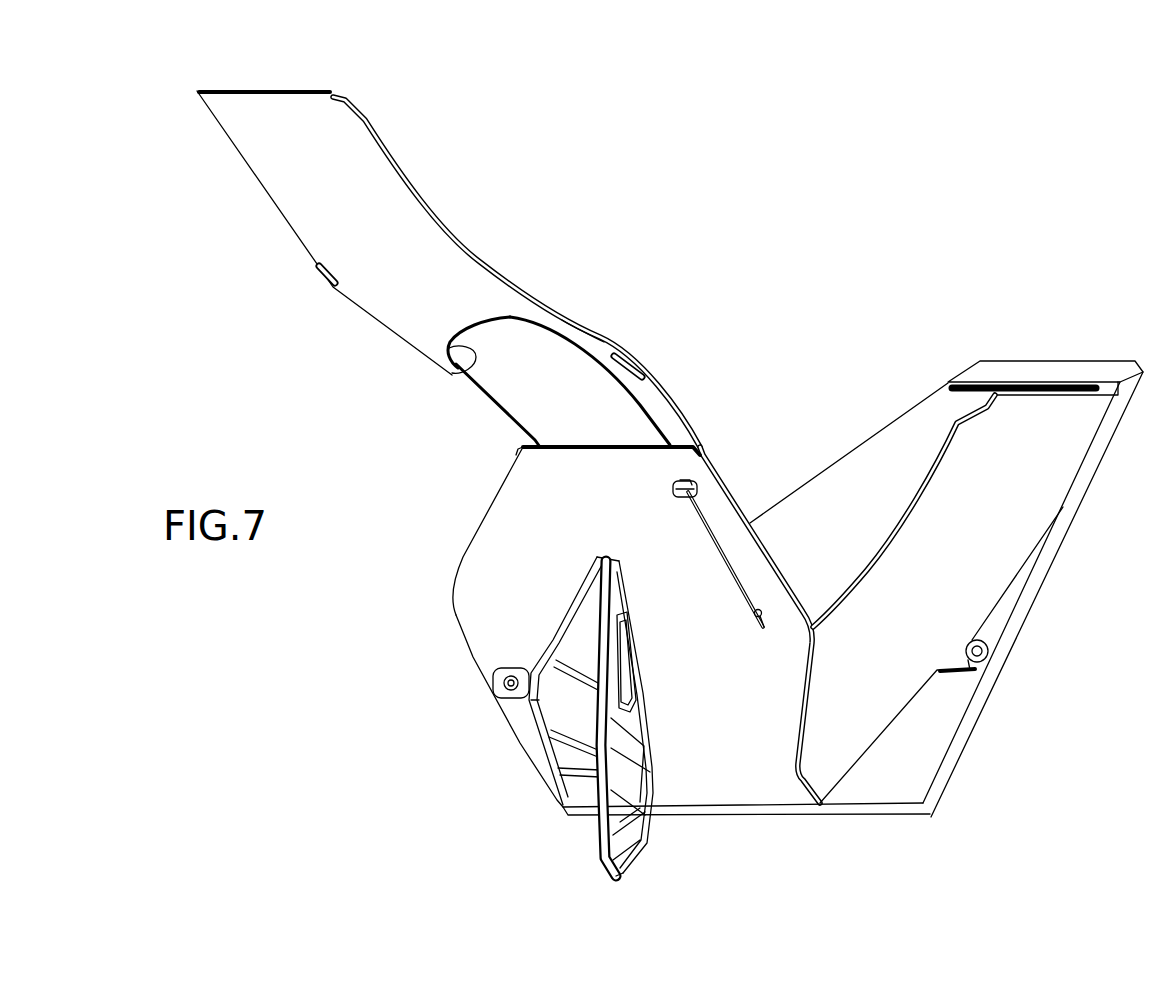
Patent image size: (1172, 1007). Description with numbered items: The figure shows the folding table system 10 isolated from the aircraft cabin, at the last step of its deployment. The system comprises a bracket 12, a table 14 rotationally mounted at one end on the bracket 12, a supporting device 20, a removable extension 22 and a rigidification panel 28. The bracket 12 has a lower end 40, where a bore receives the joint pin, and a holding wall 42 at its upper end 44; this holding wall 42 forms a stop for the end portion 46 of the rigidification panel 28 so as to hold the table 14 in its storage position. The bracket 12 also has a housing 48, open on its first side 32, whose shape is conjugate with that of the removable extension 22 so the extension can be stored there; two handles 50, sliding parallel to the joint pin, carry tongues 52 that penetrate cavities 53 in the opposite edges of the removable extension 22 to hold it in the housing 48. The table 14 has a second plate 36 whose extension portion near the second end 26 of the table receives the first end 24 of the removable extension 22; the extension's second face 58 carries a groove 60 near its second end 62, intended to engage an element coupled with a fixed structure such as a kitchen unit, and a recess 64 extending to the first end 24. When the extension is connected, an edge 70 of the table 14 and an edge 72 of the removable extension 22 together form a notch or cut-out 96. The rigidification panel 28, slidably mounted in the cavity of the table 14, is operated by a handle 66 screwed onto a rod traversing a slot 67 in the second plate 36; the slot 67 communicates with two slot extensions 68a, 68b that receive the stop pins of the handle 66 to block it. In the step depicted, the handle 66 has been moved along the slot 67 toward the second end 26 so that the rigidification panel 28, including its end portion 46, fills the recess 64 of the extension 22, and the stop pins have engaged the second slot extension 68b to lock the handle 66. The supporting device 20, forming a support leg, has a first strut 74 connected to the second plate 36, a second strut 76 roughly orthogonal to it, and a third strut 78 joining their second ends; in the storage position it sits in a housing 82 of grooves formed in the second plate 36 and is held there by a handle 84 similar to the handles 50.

The seat assembly 10 is at (767, 316).
The bracket 12 is at (1105, 355).
The table 14 is at (455, 612).
The supporting device 20 is at (603, 872).
The removable extension 22 is at (485, 261).
The first end 24 is at (538, 448).
The second end 26 is at (618, 447).
The rigidification panel 28 is at (537, 357).
The first side 32 is at (860, 460).
The second plate 36 is at (491, 586).
The lower end 40 is at (910, 810).
The holding wall 42 is at (990, 370).
The upper end 44 is at (1033, 361).
The end portion 46 is at (500, 330).
The housing 48 is at (1068, 486).
The handles 50 is at (970, 672).
The tongues 52 is at (958, 656).
The cavities 53 is at (578, 322).
The second face 58 is at (303, 199).
The groove 60 is at (237, 103).
The second end 62 is at (313, 91).
The recess 64 is at (457, 367).
The handle 66 is at (672, 497).
The slot 67 is at (730, 557).
The slot extension 68a is at (752, 611).
The second slot extension 68b is at (694, 482).
The edge 70 is at (497, 493).
The edge 72 is at (467, 390).
The first strut 74 is at (640, 723).
The second strut 76 is at (647, 825).
The third strut 78 is at (593, 835).
The housing 82 is at (527, 727).
The handle 84 is at (502, 697).
The hinge assembly 96 is at (381, 448).